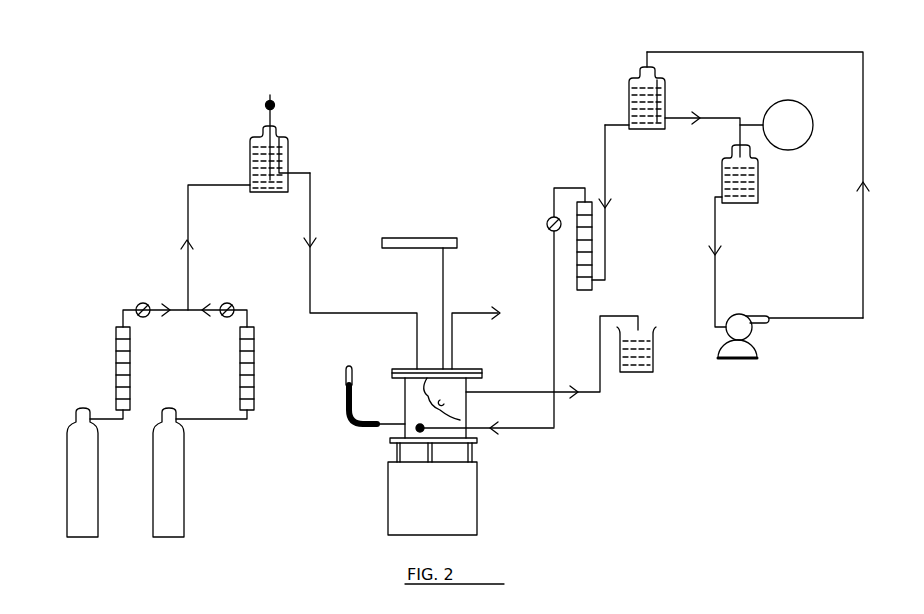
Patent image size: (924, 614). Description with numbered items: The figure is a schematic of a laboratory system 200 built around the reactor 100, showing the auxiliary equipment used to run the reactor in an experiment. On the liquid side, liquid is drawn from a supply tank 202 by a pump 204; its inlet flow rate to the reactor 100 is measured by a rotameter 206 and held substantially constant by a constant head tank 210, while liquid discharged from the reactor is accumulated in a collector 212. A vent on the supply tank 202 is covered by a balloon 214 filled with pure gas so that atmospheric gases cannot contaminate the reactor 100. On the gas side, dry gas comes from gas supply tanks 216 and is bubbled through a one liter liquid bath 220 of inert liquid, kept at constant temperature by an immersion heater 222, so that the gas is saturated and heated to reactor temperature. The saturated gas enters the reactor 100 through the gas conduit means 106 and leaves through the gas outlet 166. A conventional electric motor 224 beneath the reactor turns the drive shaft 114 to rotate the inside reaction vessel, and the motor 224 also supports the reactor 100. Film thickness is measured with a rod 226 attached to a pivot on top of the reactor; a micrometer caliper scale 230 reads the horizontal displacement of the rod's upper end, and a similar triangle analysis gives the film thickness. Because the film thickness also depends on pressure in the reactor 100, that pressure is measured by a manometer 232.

The system 200 is at (453, 35).
The reactor 100 is at (403, 360).
The gas conduit means 106 is at (311, 198).
The drive shaft 114 is at (440, 457).
The gas outlet 166 is at (462, 313).
The supply tank 202 is at (758, 184).
The pump 204 is at (752, 359).
The rotameter 206 is at (592, 244).
The constant head tank 210 is at (635, 103).
The collector 212 is at (646, 362).
The balloon 214 is at (771, 113).
The gas supply tanks 216 is at (88, 472).
The liquid bath 220 is at (258, 158).
The immersion heater 222 is at (274, 121).
The electric motor 224 is at (432, 498).
The rod 226 is at (443, 272).
The micrometer caliper scale 230 is at (396, 243).
The manometer 232 is at (342, 425).